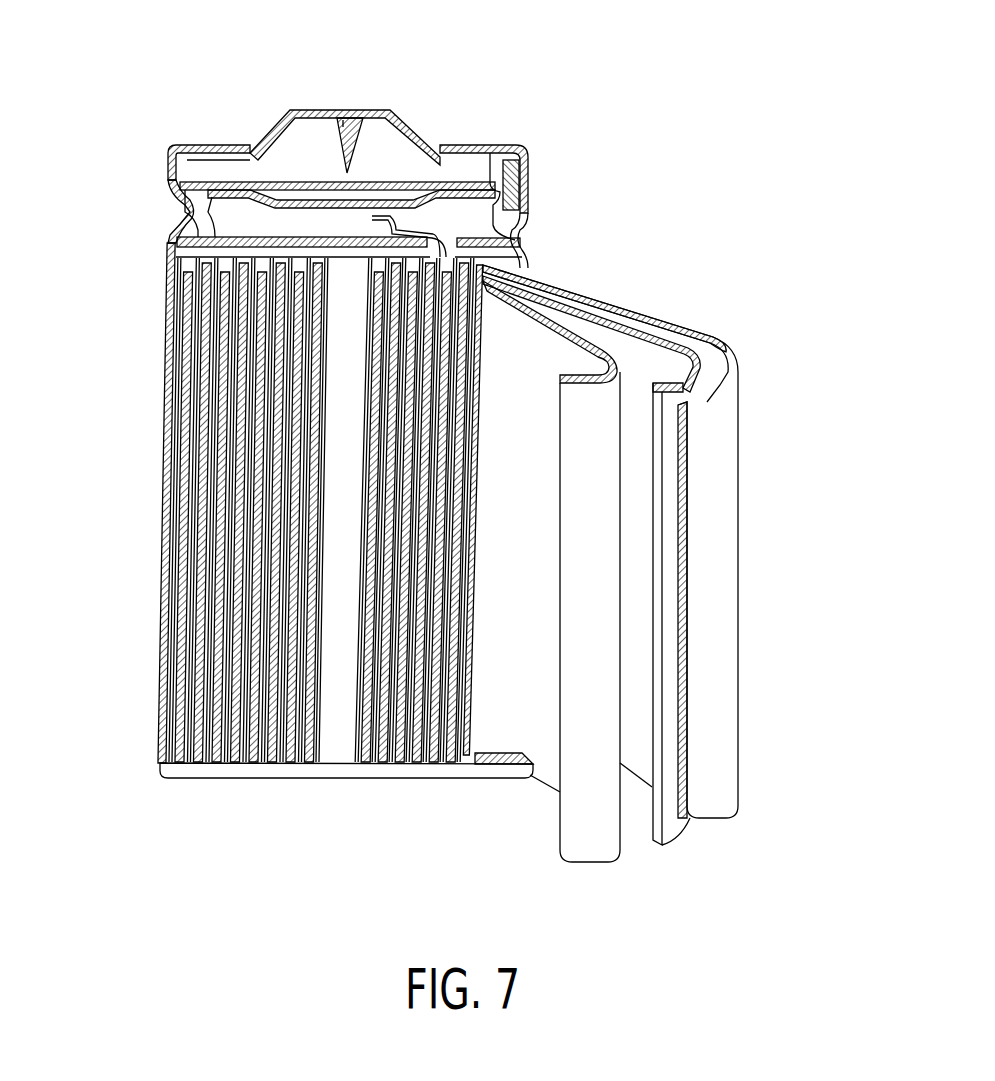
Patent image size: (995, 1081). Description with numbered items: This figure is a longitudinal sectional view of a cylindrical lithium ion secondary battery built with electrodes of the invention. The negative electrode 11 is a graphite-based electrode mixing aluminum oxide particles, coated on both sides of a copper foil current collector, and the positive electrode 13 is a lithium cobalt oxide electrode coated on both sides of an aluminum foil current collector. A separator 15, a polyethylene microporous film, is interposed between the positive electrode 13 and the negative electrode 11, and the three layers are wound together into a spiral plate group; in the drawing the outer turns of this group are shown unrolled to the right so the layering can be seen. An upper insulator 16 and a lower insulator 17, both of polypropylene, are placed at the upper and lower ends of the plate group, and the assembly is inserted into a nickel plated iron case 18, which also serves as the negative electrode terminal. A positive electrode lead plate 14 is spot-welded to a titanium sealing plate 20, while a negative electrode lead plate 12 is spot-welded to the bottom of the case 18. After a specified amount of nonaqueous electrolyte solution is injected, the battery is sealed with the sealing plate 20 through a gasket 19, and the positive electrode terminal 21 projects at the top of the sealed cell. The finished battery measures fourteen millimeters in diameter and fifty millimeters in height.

The negative electrode 11 is at (737, 352).
The negative electrode lead plate 12 is at (326, 778).
The positive electrode 13 is at (600, 506).
The positive electrode lead plate 14 is at (440, 232).
The separator 15 is at (645, 302).
The upper insulator 16 is at (187, 222).
The lower insulator 17 is at (459, 772).
The case 18 is at (182, 540).
The gasket 19 is at (530, 185).
The sealing plate 20 is at (280, 188).
The positive electrode terminal 21 is at (343, 112).